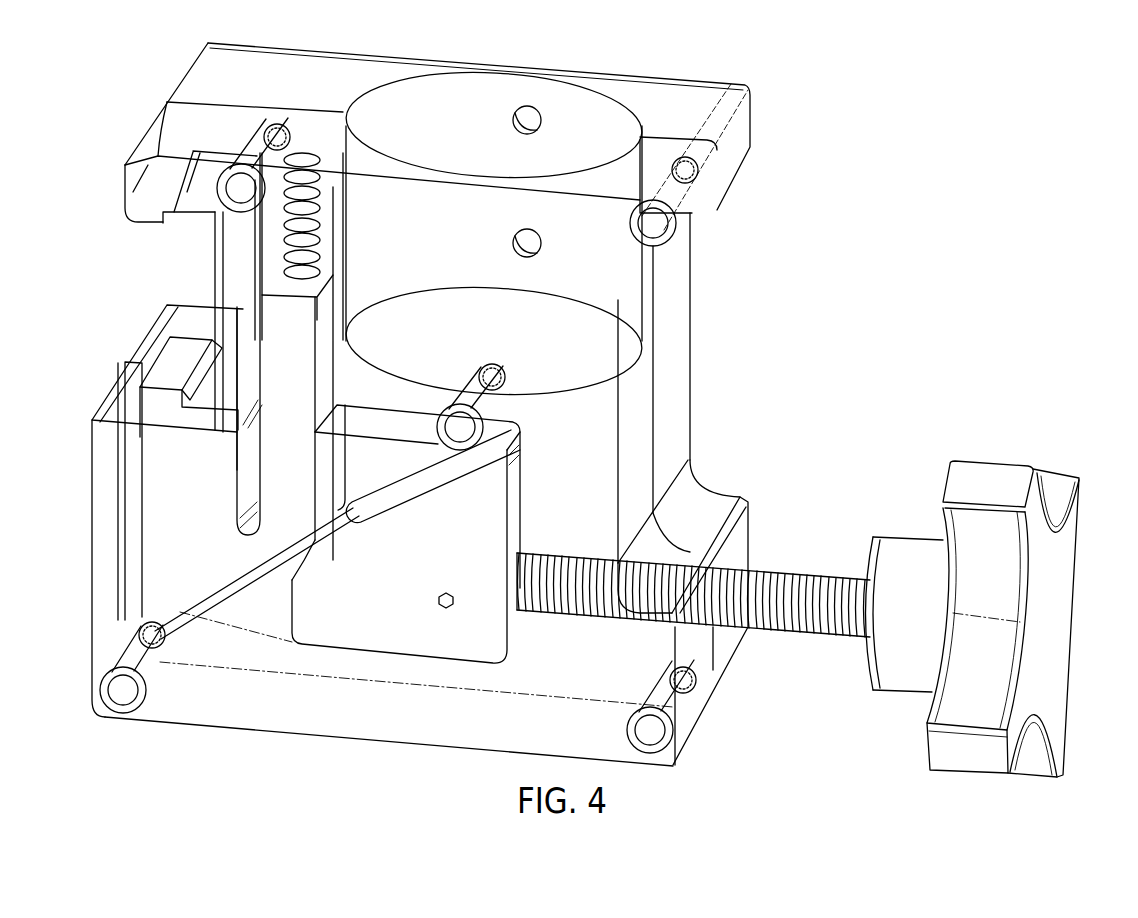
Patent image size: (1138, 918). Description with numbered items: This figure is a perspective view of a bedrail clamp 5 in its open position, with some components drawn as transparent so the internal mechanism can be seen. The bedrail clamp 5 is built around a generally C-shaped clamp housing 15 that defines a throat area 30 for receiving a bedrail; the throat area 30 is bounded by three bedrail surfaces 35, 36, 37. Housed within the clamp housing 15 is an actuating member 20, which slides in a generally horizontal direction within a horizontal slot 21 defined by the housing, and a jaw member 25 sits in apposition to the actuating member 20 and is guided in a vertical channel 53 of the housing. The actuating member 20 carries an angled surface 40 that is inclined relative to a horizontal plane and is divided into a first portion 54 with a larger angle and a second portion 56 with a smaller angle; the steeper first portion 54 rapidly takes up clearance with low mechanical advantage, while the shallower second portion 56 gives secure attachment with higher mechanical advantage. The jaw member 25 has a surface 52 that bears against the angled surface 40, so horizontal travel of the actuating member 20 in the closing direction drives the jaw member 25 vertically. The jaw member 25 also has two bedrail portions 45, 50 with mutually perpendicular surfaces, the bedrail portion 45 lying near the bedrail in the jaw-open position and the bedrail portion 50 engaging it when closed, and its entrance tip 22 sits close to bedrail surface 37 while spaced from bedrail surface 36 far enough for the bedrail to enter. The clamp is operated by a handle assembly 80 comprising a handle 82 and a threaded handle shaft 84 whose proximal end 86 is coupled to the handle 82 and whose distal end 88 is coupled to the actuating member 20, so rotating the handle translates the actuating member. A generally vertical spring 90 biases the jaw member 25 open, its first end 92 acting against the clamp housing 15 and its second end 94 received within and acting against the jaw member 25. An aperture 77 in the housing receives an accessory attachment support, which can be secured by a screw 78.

The bedrail clamp 5 is at (805, 238).
The clamp housing 15 is at (677, 383).
The actuating member 20 is at (406, 547).
The horizontal slot 21 is at (417, 457).
The entrance tip 22 is at (176, 387).
The jaw member 25 is at (389, 564).
The throat area 30 is at (128, 274).
The bedrail surface 35 is at (222, 247).
The bedrail surface 36 is at (207, 213).
The bedrail surface 37 is at (187, 302).
The angled surface 40 is at (453, 473).
The bedrail portion 45 is at (210, 385).
The bedrail portion 50 is at (213, 343).
The surface 52 is at (230, 605).
The vertical channel 53 is at (130, 475).
The first portion 54 is at (310, 565).
The second portion 56 is at (387, 507).
The aperture 77 is at (493, 124).
The screw 78 is at (483, 400).
The handle assembly 80 is at (940, 443).
The handle 82 is at (1050, 614).
The handle shaft 84 is at (790, 573).
The proximal end 86 is at (860, 643).
The distal end 88 is at (522, 548).
The spring 90 is at (313, 212).
The first end 92 is at (262, 185).
The second end 94 is at (313, 277).